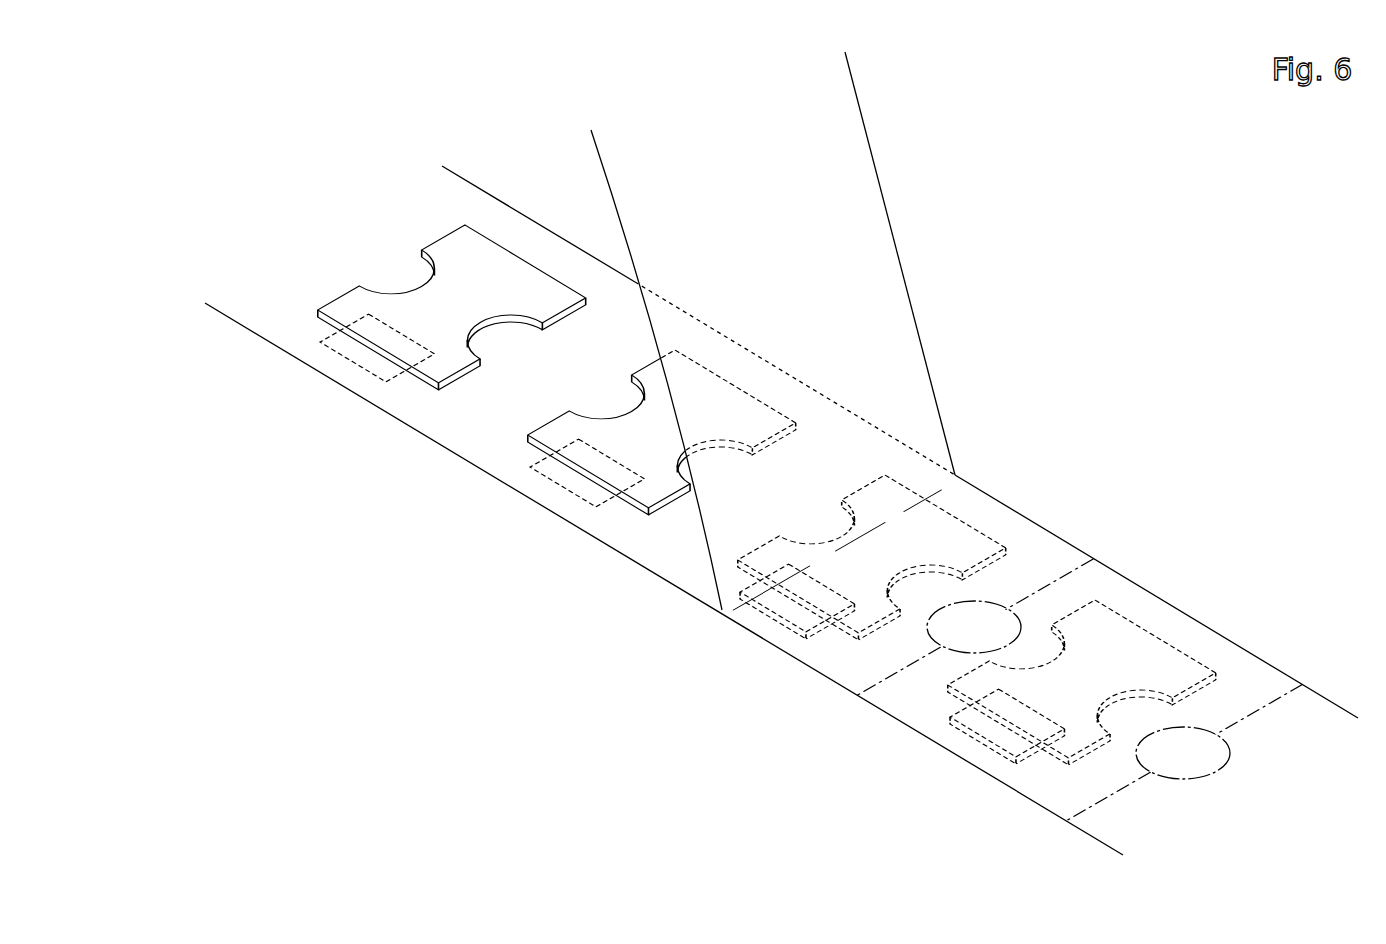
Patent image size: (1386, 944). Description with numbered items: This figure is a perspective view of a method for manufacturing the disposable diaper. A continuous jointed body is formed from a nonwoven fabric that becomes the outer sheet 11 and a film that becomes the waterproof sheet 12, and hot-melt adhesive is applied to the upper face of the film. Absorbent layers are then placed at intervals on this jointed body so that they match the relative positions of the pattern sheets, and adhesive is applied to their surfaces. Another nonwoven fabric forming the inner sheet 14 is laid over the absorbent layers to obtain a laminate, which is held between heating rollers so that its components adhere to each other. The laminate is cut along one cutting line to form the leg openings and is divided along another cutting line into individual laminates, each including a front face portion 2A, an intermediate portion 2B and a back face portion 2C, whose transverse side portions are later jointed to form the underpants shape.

The outer sheet 11 is at (278, 328).
The waterproof sheet 12 is at (255, 305).
The inner sheet 14 is at (872, 250).
The front face portion 2A is at (1137, 603).
The intermediate portion 2B is at (1083, 792).
The back face portion 2C is at (1028, 782).